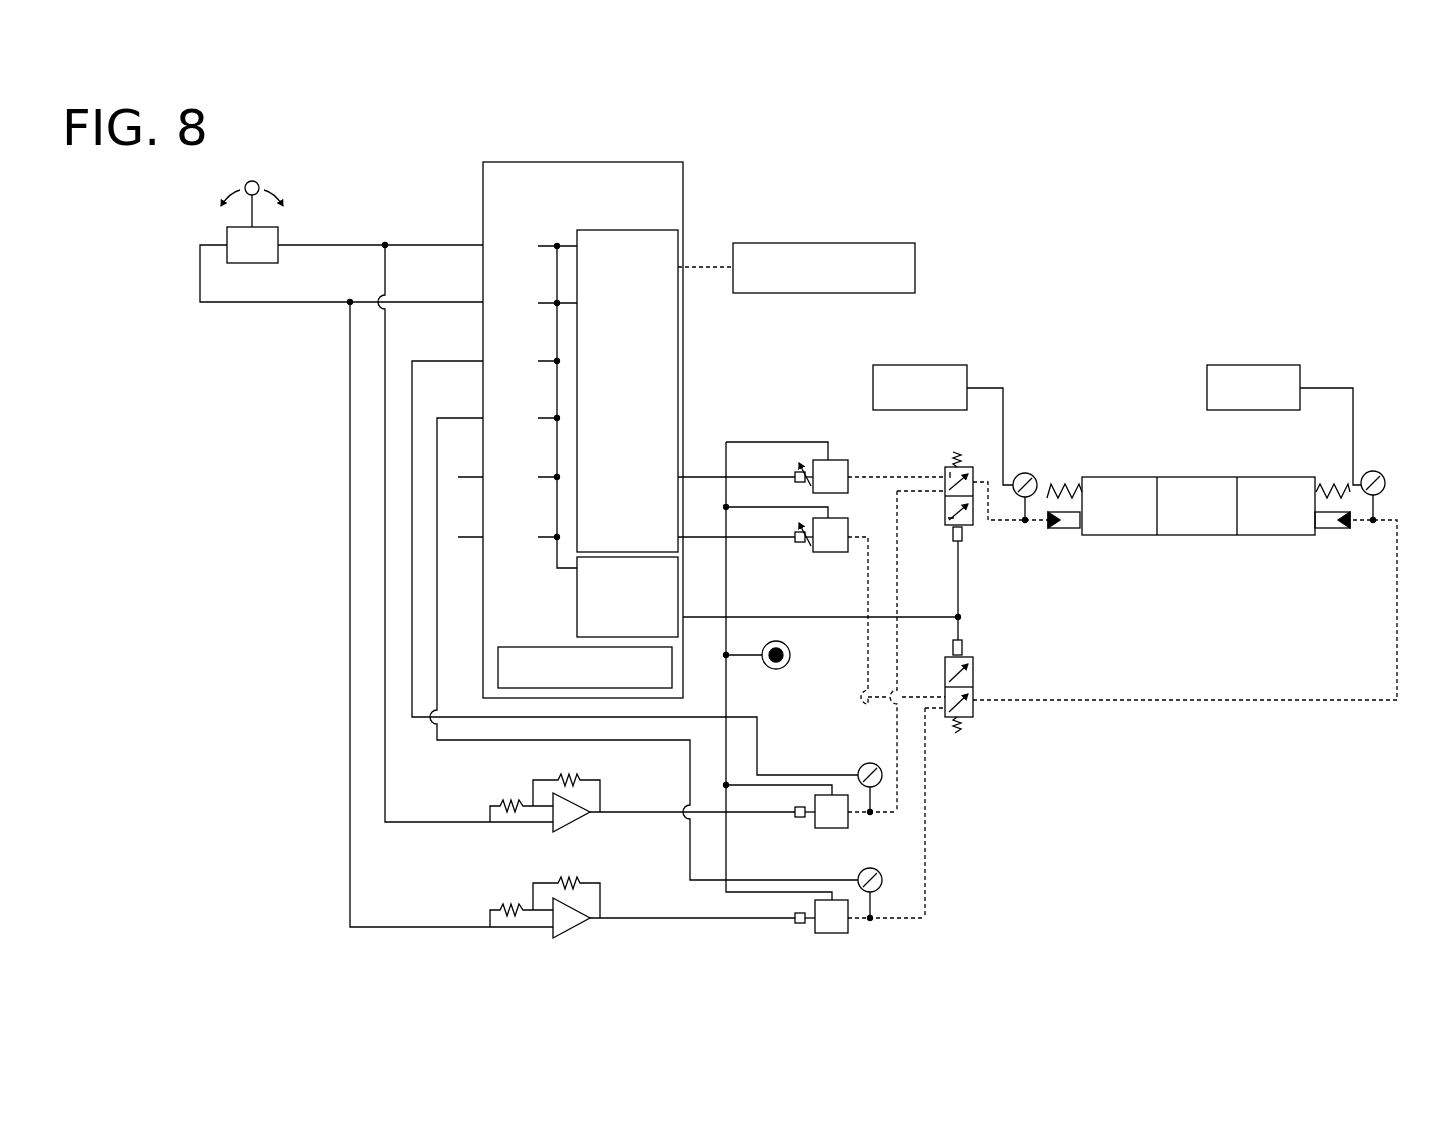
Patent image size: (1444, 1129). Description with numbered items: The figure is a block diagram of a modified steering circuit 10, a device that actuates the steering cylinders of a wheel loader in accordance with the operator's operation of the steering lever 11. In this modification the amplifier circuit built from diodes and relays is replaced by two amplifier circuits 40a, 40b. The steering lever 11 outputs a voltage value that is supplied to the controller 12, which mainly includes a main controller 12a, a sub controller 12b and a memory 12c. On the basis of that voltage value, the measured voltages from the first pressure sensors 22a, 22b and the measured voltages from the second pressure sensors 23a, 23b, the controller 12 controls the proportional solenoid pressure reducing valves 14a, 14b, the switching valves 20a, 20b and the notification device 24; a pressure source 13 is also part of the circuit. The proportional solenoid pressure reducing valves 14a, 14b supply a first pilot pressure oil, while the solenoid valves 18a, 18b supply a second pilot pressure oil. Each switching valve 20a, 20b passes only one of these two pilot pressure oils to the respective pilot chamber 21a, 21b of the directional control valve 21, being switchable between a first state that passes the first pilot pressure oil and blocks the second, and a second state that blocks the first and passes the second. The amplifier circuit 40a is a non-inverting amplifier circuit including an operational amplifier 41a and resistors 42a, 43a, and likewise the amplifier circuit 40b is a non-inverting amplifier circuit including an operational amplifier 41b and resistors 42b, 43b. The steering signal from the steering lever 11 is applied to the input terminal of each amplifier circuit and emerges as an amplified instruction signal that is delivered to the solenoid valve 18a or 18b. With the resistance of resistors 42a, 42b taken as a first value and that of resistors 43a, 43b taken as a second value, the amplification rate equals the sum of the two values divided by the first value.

The steering circuit 10 is at (1118, 176).
The steering lever 11 is at (282, 262).
The controller 12 is at (651, 161).
The main controller 12a is at (594, 230).
The sub controller 12b is at (577, 608).
The memory 12c is at (570, 647).
The pressure source 13 is at (786, 662).
The proportional solenoid pressure reducing valve 14a is at (836, 462).
The proportional solenoid pressure reducing valve 14b is at (834, 552).
The solenoid valve 18a is at (844, 820).
The solenoid valve 18b is at (844, 927).
The switching valve 20a is at (970, 526).
The switching valve 20b is at (974, 676).
The directional control valve 21 is at (1112, 477).
The pilot chamber 21a is at (1060, 530).
The pilot chamber 21b is at (1320, 530).
The first pressure sensor 22a is at (1030, 472).
The first pressure sensor 22b is at (1377, 471).
The second pressure sensor 23a is at (868, 762).
The second pressure sensor 23b is at (874, 869).
The notification device 24 is at (860, 243).
The amplifier circuit 40a is at (476, 766).
The amplifier circuit 40b is at (476, 875).
The operational amplifier 41a is at (590, 802).
The operational amplifier 41b is at (590, 908).
The resistor 42a is at (500, 803).
The resistor 42b is at (500, 908).
The resistor 43a is at (584, 780).
The resistor 43b is at (584, 883).